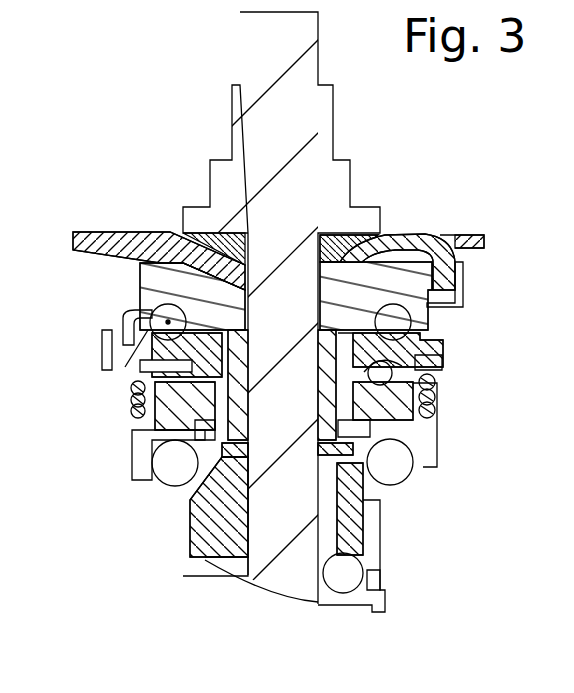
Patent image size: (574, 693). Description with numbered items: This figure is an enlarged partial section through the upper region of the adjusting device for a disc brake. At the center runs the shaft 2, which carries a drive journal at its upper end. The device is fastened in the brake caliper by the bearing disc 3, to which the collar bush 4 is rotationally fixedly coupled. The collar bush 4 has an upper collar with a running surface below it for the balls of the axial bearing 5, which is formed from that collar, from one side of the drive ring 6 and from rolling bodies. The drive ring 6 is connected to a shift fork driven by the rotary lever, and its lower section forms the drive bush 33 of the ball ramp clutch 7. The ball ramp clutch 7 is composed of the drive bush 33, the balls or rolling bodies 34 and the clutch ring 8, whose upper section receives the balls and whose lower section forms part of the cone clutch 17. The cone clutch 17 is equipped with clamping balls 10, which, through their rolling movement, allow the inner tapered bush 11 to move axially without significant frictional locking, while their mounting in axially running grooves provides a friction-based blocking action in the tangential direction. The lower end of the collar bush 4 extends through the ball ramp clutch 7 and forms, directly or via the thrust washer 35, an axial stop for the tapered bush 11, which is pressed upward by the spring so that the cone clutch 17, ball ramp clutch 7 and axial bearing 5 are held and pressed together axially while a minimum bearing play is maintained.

The shaft 2 is at (255, 205).
The bearing disc 3 is at (113, 231).
The collar bush 4 is at (399, 277).
The axial bearing 5 is at (418, 312).
The drive ring 6 is at (125, 343).
The ball ramp clutch 7 is at (441, 372).
The clutch ring 8 is at (444, 457).
The clamping balls 10 is at (408, 487).
The tapered bush 11 is at (366, 533).
The cone clutch 17 is at (114, 494).
The drive bush 33 is at (157, 357).
The balls or rolling bodies 34 is at (444, 365).
The thrust washer 35 is at (329, 447).